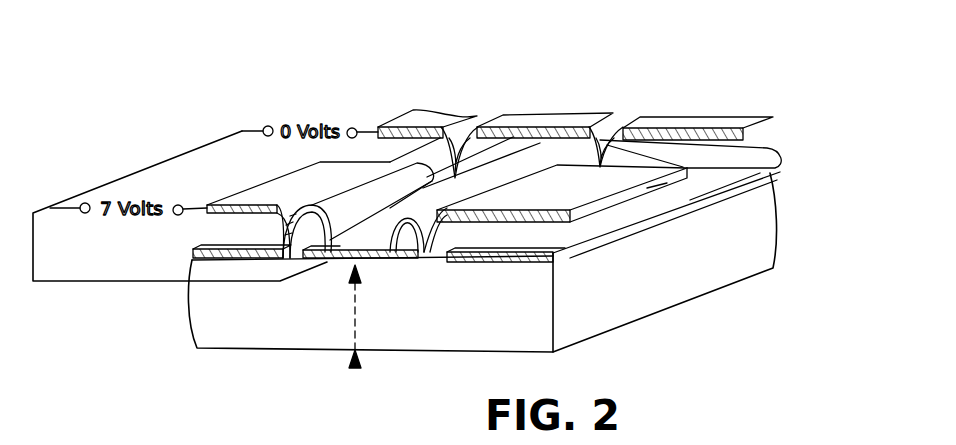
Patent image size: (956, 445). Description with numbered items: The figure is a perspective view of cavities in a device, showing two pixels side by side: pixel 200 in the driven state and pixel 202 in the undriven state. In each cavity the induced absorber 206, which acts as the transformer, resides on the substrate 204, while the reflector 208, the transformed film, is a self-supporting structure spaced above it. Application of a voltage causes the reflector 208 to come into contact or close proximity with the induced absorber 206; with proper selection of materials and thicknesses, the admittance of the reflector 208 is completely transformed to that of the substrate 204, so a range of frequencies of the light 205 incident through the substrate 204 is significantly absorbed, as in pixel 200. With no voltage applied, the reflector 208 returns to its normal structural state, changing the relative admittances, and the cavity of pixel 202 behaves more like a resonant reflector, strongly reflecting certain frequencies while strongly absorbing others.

The pixel 200 is at (345, 207).
The pixel 202 is at (550, 112).
The substrate 204 is at (703, 238).
The light 205 is at (355, 368).
The induced absorber 206 is at (383, 262).
The reflector 208 is at (687, 168).